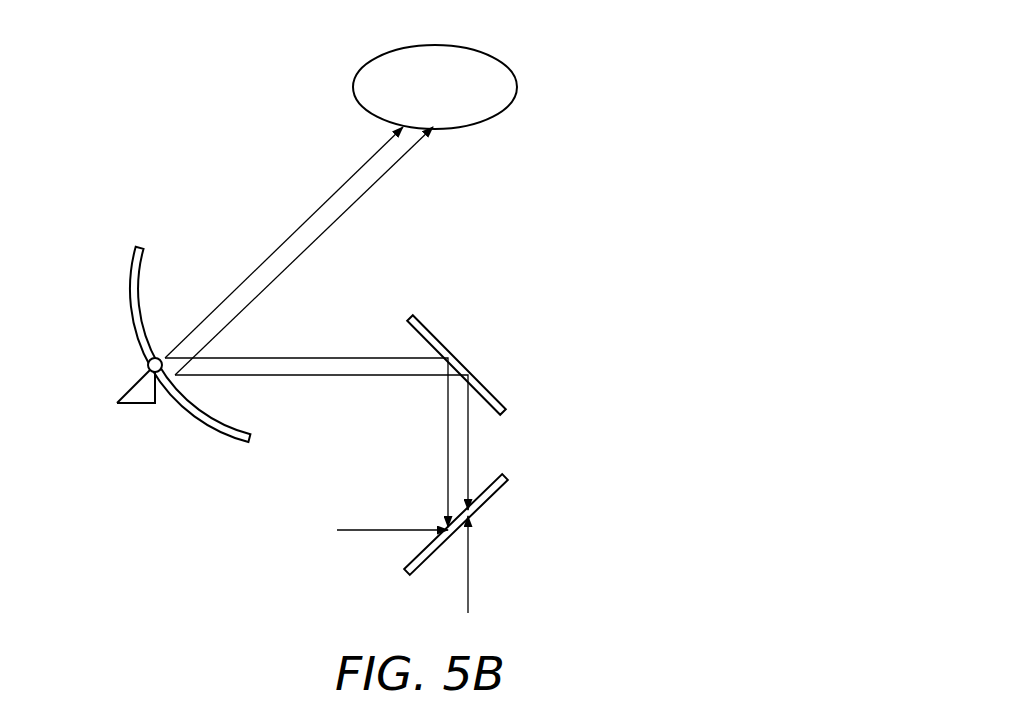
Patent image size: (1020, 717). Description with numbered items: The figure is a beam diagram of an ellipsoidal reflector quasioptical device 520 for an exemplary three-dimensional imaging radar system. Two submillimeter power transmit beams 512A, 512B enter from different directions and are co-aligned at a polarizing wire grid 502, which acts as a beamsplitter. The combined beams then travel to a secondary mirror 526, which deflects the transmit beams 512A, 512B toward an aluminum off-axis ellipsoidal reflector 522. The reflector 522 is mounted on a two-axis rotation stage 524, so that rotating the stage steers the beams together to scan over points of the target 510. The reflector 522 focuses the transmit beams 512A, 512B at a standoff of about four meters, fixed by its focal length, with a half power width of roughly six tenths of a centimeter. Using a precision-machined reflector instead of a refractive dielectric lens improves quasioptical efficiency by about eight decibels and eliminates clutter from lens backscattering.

The target 510 is at (367, 60).
The ellipsoidal reflector quasioptical device 520 is at (525, 200).
The off-axis ellipsoidal reflector 522 is at (135, 262).
The two-axis rotation stage 524 is at (138, 385).
The secondary mirror 526 is at (470, 370).
The polarizing wire grid 502 is at (497, 478).
The transmit beam 512A is at (563, 520).
The transmit beam 512B is at (270, 493).